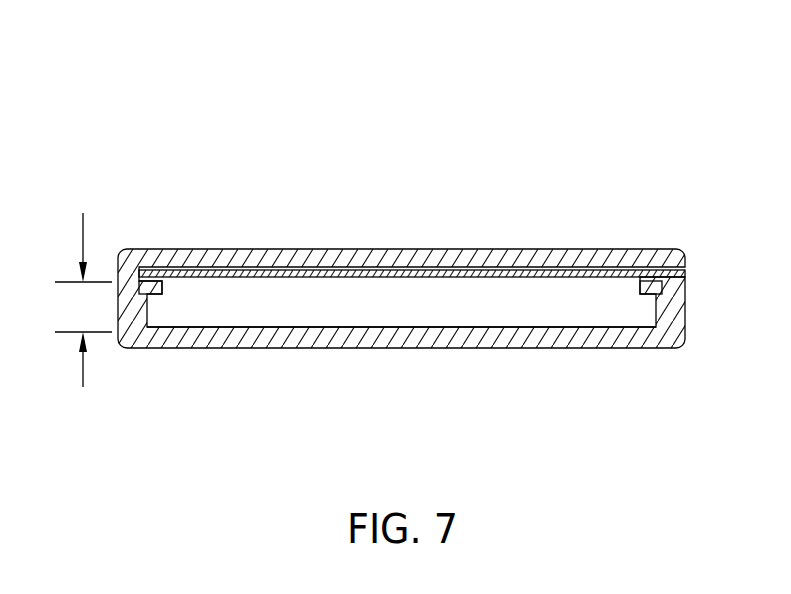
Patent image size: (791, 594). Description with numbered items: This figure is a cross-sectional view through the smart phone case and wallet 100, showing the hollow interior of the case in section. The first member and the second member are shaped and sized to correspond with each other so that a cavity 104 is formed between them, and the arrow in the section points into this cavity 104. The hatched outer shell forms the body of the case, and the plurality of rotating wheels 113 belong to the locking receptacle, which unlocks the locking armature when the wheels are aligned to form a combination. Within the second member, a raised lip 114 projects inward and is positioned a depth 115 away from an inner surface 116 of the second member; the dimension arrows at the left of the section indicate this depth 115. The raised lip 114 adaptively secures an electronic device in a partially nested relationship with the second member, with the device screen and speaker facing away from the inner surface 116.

The smart phone case and wallet 100 is at (370, 239).
The cavity 104 is at (302, 303).
The rotating wheels 113 is at (131, 249).
The raised lip 114 is at (645, 290).
The depth 115 is at (86, 325).
The inner surface 116 is at (185, 327).